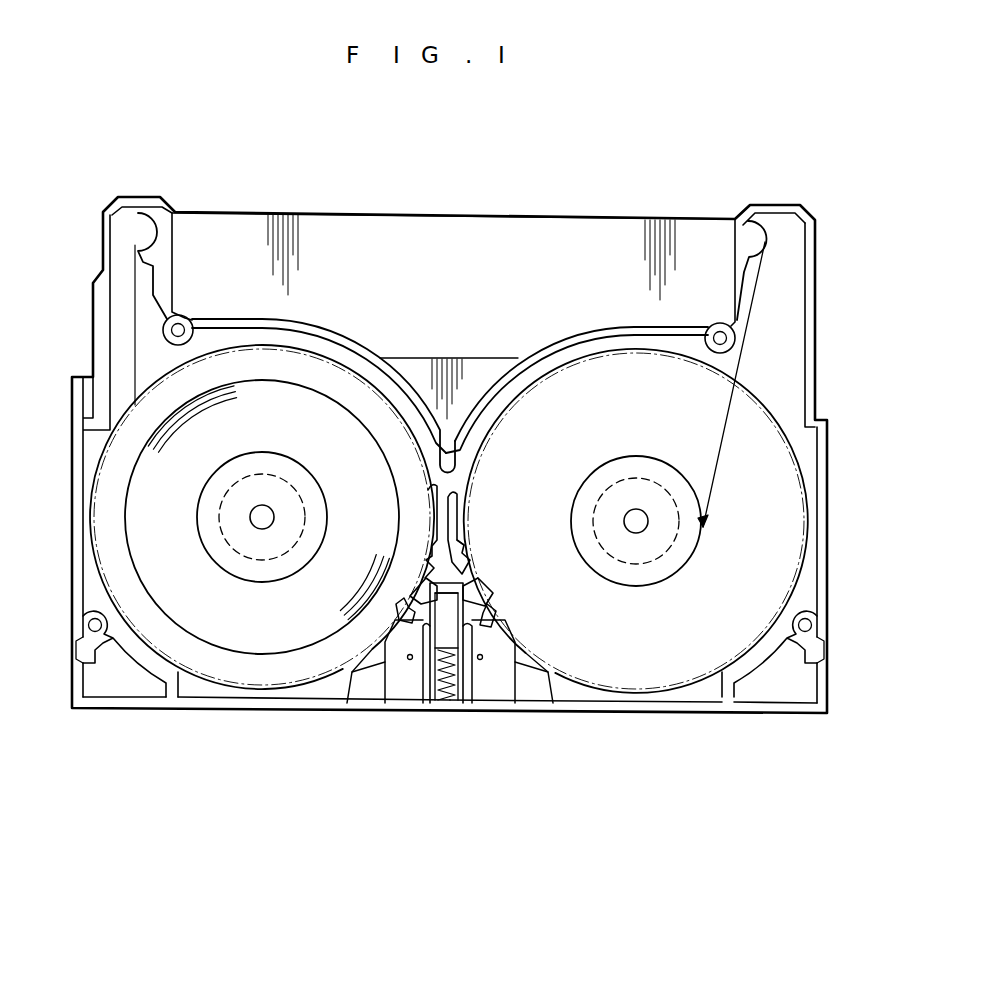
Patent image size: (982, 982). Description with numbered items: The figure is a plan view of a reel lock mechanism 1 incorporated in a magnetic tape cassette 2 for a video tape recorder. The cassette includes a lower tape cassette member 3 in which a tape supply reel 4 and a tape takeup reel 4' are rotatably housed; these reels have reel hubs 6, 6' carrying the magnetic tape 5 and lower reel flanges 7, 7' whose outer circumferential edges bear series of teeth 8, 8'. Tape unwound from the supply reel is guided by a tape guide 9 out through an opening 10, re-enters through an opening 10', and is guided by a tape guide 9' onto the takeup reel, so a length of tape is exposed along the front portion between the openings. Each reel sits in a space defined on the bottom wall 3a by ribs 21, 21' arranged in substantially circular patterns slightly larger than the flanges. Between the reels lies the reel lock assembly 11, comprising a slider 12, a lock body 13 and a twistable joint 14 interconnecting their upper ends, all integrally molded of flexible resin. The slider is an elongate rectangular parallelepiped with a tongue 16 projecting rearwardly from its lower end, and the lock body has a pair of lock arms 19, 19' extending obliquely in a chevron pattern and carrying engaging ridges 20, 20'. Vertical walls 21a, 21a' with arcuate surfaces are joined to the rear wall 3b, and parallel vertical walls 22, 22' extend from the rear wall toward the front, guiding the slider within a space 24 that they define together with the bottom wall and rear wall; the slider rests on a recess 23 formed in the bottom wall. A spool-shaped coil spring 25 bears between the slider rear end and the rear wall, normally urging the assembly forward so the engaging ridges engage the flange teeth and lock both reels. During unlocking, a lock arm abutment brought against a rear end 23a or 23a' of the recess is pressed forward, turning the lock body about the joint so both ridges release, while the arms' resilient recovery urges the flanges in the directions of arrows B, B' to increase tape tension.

The reel lock mechanism 1 is at (260, 770).
The magnetic tape cassette 2 is at (827, 440).
The lower tape cassette member 3 is at (827, 496).
The bottom wall 3a is at (193, 692).
The rear wall 3b is at (662, 720).
The tape supply reel 4 is at (323, 372).
The tape takeup reel 4' is at (581, 366).
The magnetic tape 5 is at (318, 212).
The reel hub 6 is at (262, 517).
The reel hub 6' is at (636, 499).
The reel flange 7 is at (319, 362).
The reel flange 7' is at (577, 372).
The teeth 8 is at (394, 520).
The teeth 8' is at (498, 548).
The tape guide 9 is at (130, 279).
The tape guide 9' is at (782, 287).
The opening 10 is at (139, 175).
The opening 10' is at (775, 184).
The reel lock assembly 11 is at (470, 660).
The slider 12 is at (448, 632).
The lock body 13 is at (458, 540).
The twistable joint 14 is at (436, 588).
The tongue 16 is at (472, 695).
The lock arm 19 is at (397, 563).
The lock arm 19' is at (495, 577).
The engaging ridge 20 is at (344, 619).
The engaging ridge 20' is at (514, 602).
The rib 21 is at (258, 512).
The rib 21' is at (636, 532).
The vertical wall 21a is at (345, 716).
The vertical wall 21a' is at (579, 705).
The vertical wall 22 is at (406, 703).
The vertical wall 22' is at (517, 721).
The recess 23 is at (458, 702).
The rear end of recess 23a is at (378, 706).
The rear end of recess 23a' is at (561, 724).
The space 24 is at (437, 702).
The coil spring 25 is at (426, 695).
The direction arrow B is at (295, 575).
The direction arrow B' is at (597, 580).